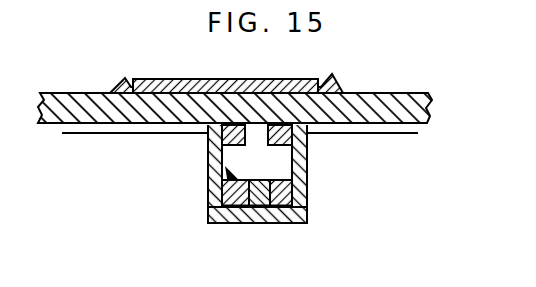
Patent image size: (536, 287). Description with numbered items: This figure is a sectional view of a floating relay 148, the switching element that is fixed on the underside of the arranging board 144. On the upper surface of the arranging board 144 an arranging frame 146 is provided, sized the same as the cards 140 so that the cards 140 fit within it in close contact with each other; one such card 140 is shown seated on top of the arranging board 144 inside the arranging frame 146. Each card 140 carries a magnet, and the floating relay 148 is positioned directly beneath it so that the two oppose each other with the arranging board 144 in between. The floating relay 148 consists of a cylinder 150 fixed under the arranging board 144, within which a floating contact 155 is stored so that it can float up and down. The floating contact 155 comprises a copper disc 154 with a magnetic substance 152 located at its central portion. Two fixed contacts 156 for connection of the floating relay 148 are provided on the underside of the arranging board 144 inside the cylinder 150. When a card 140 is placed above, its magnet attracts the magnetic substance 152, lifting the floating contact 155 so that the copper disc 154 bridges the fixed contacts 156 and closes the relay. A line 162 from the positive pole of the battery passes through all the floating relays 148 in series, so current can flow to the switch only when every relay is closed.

The card 140 is at (180, 78).
The arranging board 144 is at (406, 92).
The arranging frame 146 is at (331, 78).
The floating relay 148 is at (197, 192).
The cylinder 150 is at (207, 205).
The magnetic substance 152 is at (258, 181).
The copper disc 154 is at (281, 223).
The floating contact 155 is at (213, 171).
The fixed contact 156 is at (307, 152).
The line 162 is at (396, 133).